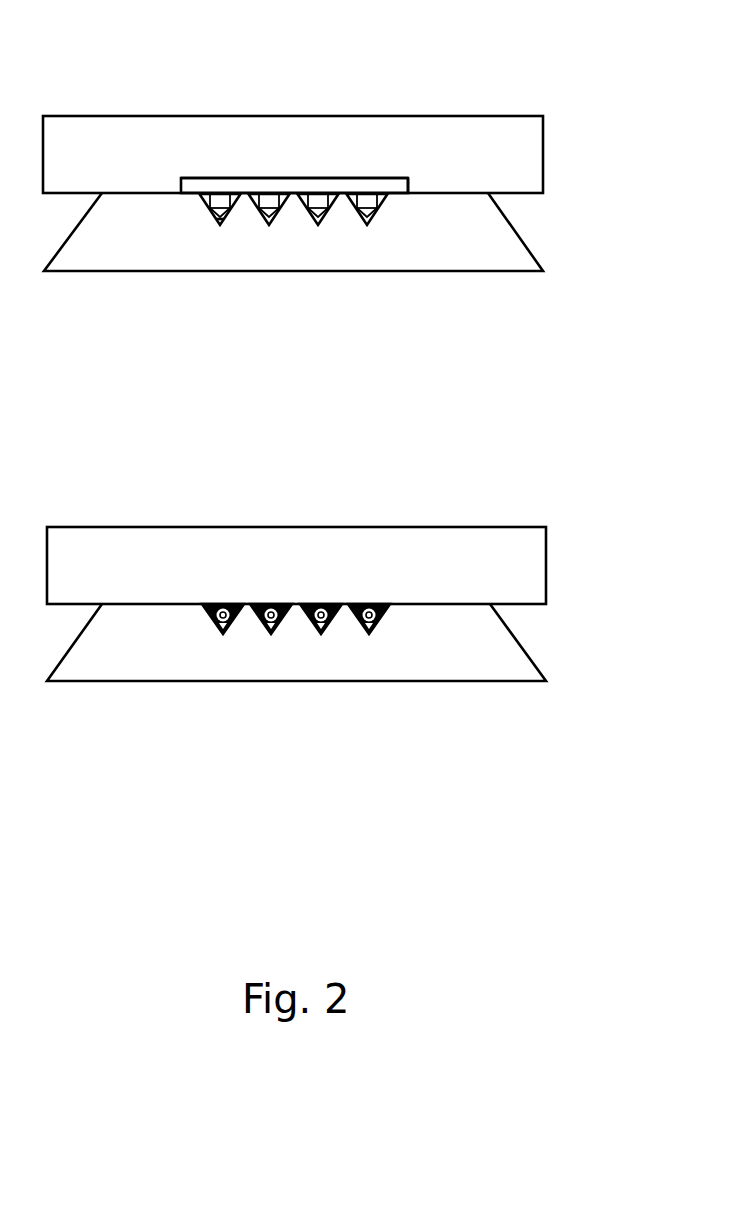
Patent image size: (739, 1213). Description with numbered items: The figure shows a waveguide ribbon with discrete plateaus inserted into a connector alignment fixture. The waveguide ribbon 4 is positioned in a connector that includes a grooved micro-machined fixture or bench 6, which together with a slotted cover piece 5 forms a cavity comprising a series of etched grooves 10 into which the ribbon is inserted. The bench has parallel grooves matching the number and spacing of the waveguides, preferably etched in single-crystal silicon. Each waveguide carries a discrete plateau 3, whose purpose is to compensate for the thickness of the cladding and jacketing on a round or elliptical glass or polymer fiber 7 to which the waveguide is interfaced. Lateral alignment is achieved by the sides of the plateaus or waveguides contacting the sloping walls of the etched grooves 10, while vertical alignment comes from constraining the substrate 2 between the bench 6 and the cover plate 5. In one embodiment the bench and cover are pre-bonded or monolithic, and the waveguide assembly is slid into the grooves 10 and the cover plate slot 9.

The substrate 2 is at (307, 185).
The discrete plateau 3 is at (328, 196).
The waveguide ribbon 4 is at (223, 177).
The slotted cover piece 5 is at (511, 142).
The grooved micro-machined fixture or bench 6 is at (433, 235).
The glass or polymer fiber 7 is at (281, 600).
The cover plate slot 9 is at (402, 177).
The etched grooves 10 is at (215, 218).